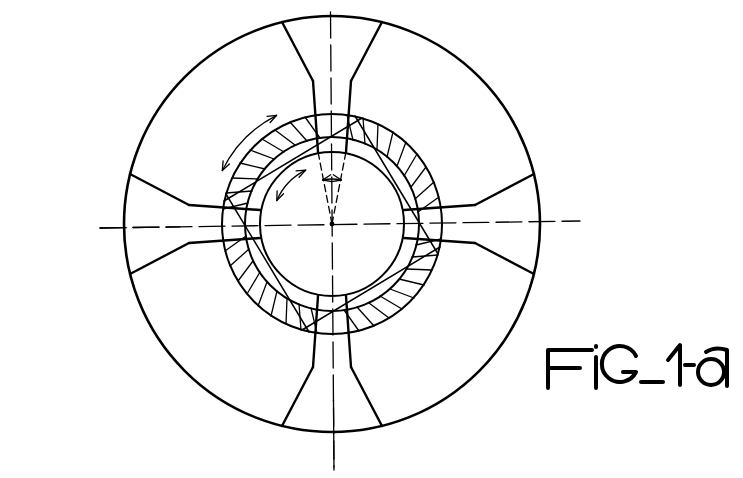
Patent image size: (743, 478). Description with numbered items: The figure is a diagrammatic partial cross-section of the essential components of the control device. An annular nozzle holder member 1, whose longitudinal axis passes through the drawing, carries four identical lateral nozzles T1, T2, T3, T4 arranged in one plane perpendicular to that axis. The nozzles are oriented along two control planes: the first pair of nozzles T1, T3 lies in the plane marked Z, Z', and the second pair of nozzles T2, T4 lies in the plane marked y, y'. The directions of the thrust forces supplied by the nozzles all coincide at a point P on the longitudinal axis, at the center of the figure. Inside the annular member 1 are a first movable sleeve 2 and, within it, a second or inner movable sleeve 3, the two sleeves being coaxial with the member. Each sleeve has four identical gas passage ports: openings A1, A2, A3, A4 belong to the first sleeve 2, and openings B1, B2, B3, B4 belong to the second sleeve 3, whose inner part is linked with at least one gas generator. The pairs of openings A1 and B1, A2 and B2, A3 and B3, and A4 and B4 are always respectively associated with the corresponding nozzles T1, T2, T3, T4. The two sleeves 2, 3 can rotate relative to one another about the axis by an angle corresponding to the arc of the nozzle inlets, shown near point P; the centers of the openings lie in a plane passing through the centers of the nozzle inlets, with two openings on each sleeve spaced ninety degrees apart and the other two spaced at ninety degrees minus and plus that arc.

The annular member 1 is at (490, 107).
The first sleeve 2 is at (408, 147).
The second sleeve 3 is at (396, 172).
The lateral nozzle T1 is at (337, 87).
The lateral nozzle T2 is at (469, 217).
The lateral nozzle T3 is at (354, 338).
The lateral nozzle T4 is at (217, 239).
The opening A1 is at (320, 110).
The opening B1 is at (365, 118).
The opening A2 is at (428, 236).
The opening B2 is at (432, 173).
The opening A3 is at (365, 318).
The opening B3 is at (356, 300).
The opening A4 is at (240, 263).
The opening B4 is at (268, 246).
The point P is at (330, 228).
The control plane Z is at (338, 235).
The control plane Z' is at (346, 435).
The control plane y is at (348, 212).
The control plane y' is at (128, 213).